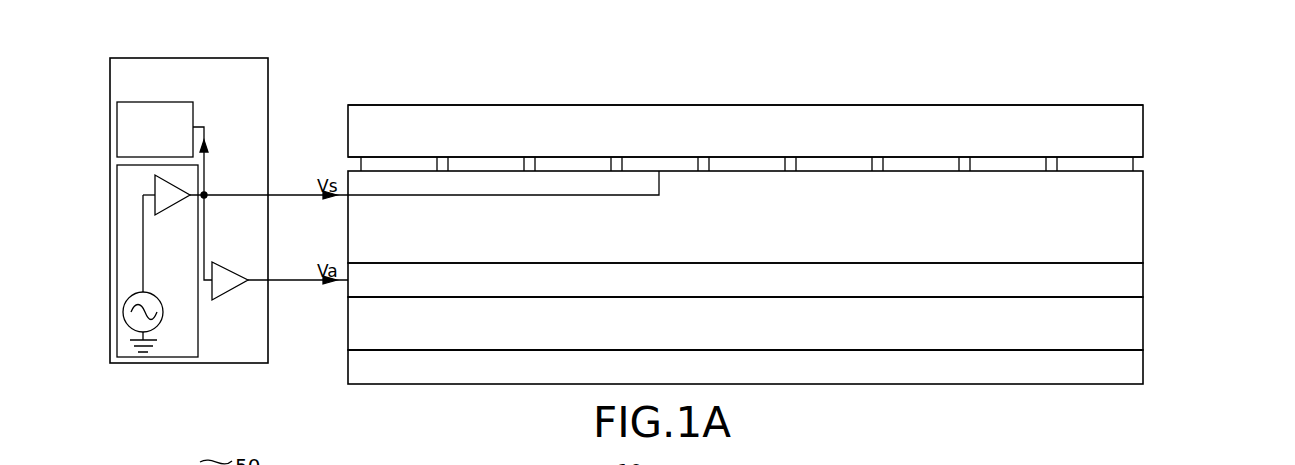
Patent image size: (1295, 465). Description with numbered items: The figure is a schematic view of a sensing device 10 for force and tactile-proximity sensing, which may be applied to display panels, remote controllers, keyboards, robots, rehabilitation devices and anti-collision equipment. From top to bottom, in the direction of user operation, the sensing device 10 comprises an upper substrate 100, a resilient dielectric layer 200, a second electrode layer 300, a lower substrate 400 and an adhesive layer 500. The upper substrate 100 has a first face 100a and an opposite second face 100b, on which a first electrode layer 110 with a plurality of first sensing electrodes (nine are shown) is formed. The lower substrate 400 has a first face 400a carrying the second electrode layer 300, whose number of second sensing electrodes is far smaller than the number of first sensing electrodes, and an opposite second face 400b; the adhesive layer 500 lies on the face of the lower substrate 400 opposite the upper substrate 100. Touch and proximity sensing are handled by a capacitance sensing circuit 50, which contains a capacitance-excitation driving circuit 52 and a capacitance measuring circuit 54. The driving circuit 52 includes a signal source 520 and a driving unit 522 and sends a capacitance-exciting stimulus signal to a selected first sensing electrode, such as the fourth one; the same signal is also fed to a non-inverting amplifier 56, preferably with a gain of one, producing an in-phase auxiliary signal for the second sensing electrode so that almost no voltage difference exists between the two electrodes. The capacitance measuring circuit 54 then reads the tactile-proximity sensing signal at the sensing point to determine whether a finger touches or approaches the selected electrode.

The sensing device 10 is at (640, 64).
The capacitance sensing circuit 50 is at (190, 58).
The capacitance-excitation driving circuit 52 is at (117, 258).
The capacitance measuring circuit 54 is at (117, 126).
The non-inverting amplifier 56 is at (239, 268).
The signal source 520 is at (123, 310).
The driving unit 522 is at (155, 180).
The upper substrate 100 is at (779, 138).
The first face 100a is at (983, 105).
The second face 100b is at (1052, 159).
The first electrode layer 110 is at (1127, 165).
The resilient dielectric layer 200 is at (1133, 216).
The second electrode layer 300 is at (1135, 280).
The lower substrate 400 is at (821, 323).
The first face 400a is at (1120, 297).
The second face 400b is at (1120, 350).
The adhesive layer 500 is at (1133, 368).